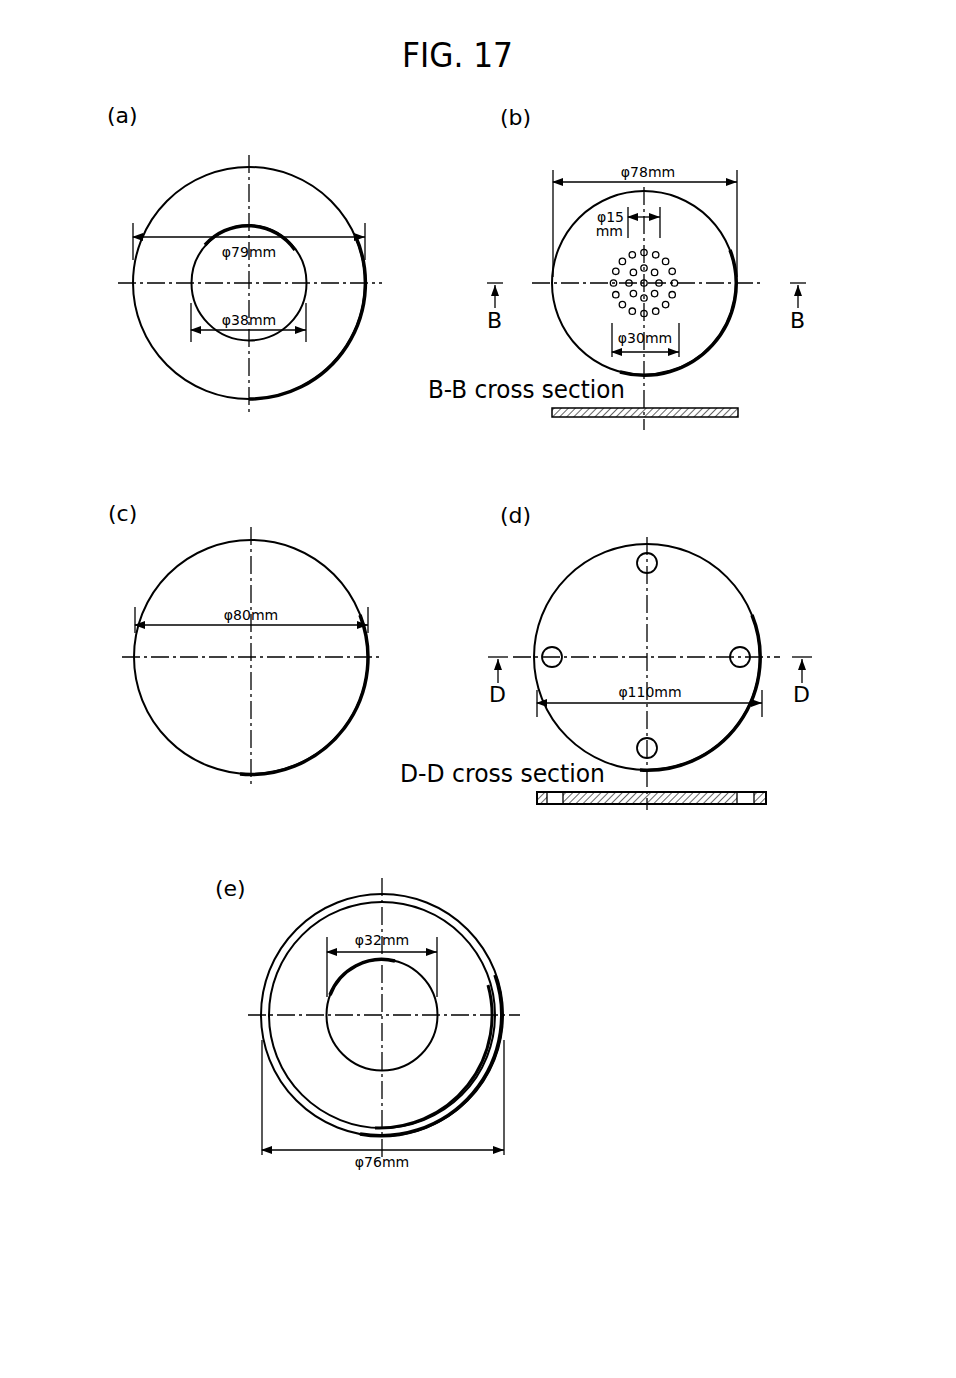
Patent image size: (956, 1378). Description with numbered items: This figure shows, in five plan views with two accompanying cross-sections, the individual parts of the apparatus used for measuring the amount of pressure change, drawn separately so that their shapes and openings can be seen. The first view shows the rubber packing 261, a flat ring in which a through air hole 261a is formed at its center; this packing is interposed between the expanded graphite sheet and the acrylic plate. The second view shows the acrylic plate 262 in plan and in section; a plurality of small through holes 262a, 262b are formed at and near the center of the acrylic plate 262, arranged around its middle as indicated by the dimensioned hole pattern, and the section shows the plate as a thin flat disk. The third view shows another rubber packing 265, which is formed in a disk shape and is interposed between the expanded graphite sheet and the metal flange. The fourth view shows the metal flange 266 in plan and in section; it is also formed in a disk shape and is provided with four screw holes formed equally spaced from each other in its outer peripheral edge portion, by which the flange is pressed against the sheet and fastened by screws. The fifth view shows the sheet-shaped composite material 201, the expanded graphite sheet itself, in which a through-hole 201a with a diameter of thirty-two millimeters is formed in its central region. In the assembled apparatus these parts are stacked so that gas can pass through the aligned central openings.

The rubber packing 261 is at (317, 205).
The through air hole 261a is at (303, 289).
The acrylic plate 262 is at (712, 242).
The small through hole 262a is at (678, 283).
The small through hole 262b is at (668, 307).
The rubber packing 265 is at (317, 595).
The metal flange 266 is at (707, 585).
The sheet-shaped composite material 201 is at (488, 897).
The through-hole 201a is at (437, 1025).